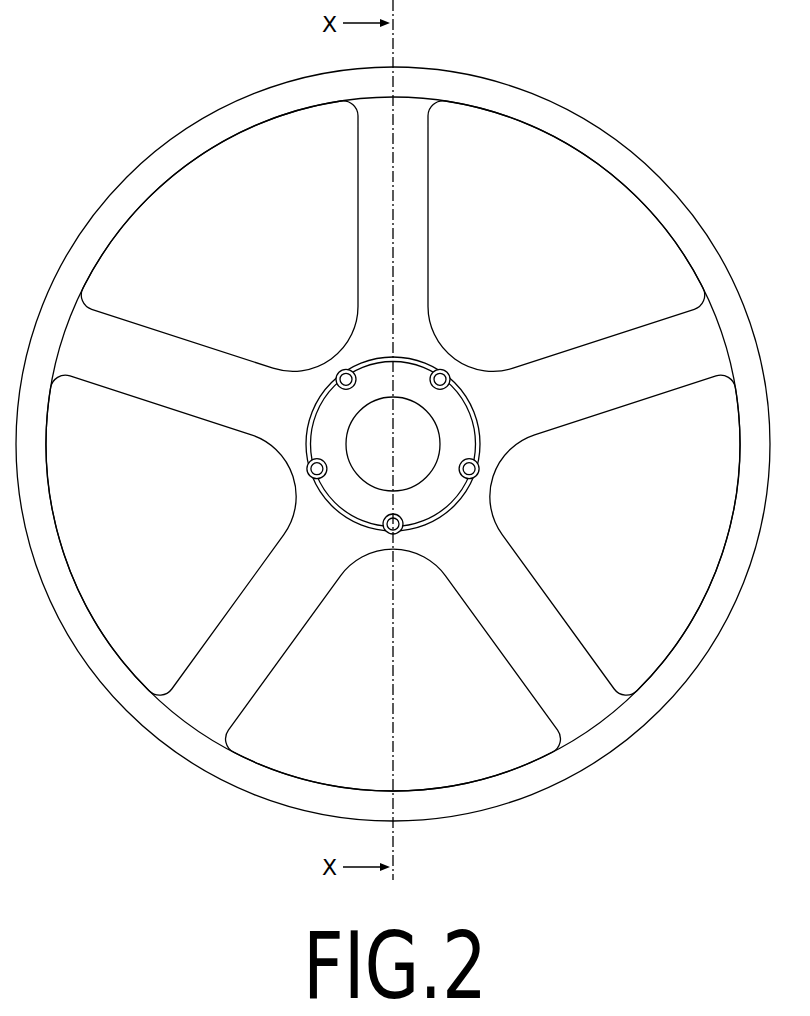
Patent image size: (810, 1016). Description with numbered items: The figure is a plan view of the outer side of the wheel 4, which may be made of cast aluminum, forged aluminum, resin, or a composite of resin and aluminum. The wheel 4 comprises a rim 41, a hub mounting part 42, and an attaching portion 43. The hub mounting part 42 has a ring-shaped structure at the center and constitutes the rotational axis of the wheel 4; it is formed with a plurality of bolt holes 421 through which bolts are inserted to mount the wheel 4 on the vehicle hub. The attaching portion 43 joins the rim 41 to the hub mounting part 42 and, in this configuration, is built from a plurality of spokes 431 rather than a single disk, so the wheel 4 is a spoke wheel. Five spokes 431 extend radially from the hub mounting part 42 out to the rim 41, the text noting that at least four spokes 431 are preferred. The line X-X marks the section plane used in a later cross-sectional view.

The wheel 4 is at (393, 431).
The rim 41 is at (672, 207).
The hub mounting part 42 is at (392, 438).
The bolt holes 421 is at (338, 370).
The attaching portion 43 is at (393, 446).
The spokes 431 is at (338, 241).